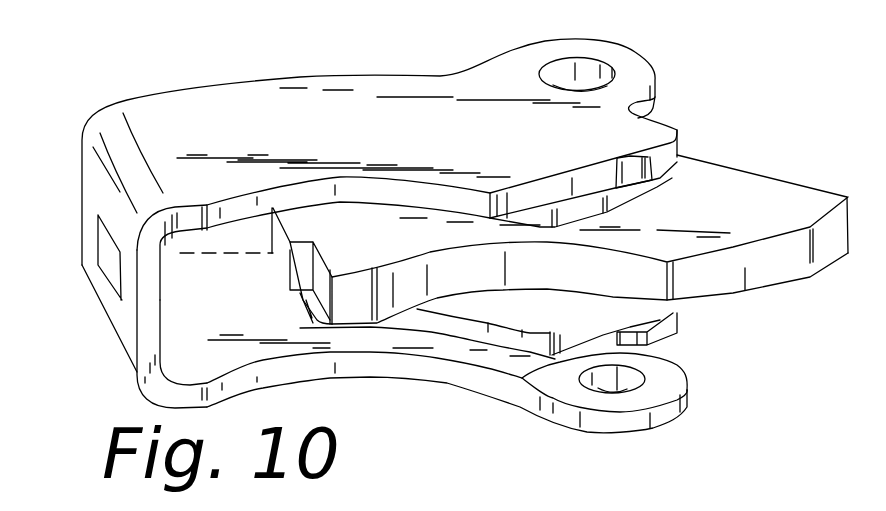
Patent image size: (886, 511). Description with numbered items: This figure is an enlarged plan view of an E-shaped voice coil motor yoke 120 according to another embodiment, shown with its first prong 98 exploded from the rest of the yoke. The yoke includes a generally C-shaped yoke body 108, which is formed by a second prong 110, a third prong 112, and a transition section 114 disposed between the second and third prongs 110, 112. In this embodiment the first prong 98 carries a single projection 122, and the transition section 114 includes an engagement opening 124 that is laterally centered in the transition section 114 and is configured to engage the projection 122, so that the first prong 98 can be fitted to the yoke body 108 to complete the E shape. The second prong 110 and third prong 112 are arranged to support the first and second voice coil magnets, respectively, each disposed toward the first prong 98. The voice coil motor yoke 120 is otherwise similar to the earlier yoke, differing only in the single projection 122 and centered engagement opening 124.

The first prong 98 is at (746, 203).
The yoke body 108 is at (255, 92).
The second prong 110 is at (540, 373).
The third prong 112 is at (400, 82).
The transition section 114 is at (127, 303).
The voice coil motor yoke 120 is at (125, 68).
The projection 122 is at (280, 257).
The engagement opening 124 is at (110, 262).